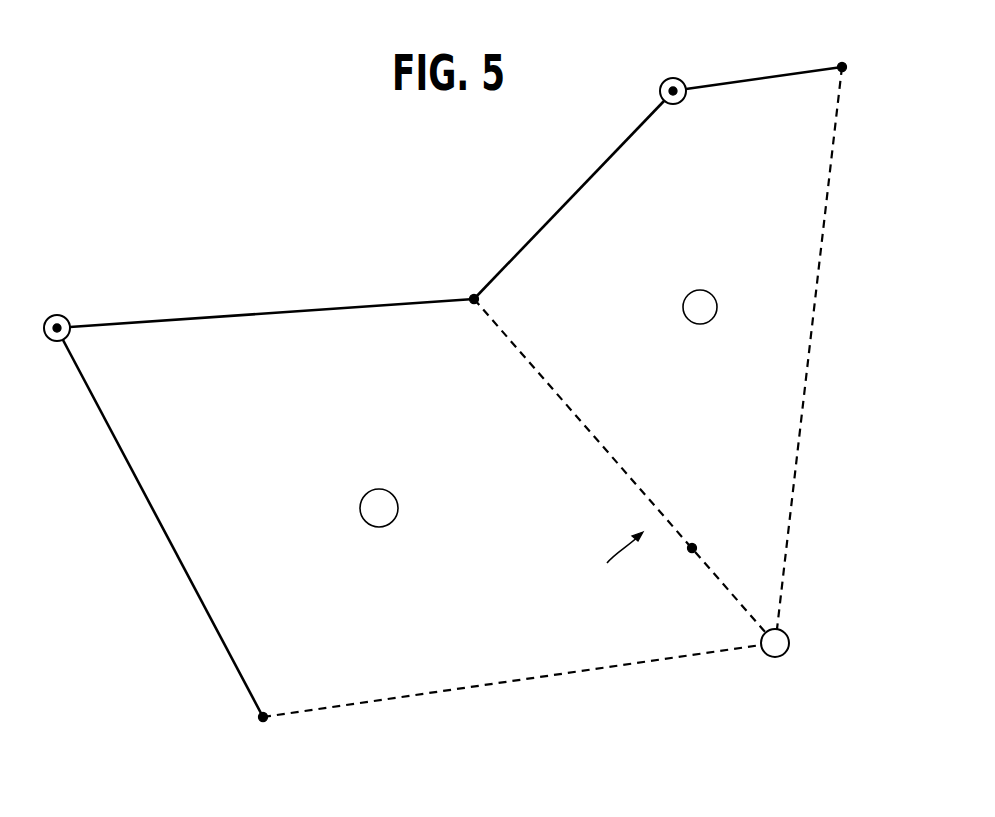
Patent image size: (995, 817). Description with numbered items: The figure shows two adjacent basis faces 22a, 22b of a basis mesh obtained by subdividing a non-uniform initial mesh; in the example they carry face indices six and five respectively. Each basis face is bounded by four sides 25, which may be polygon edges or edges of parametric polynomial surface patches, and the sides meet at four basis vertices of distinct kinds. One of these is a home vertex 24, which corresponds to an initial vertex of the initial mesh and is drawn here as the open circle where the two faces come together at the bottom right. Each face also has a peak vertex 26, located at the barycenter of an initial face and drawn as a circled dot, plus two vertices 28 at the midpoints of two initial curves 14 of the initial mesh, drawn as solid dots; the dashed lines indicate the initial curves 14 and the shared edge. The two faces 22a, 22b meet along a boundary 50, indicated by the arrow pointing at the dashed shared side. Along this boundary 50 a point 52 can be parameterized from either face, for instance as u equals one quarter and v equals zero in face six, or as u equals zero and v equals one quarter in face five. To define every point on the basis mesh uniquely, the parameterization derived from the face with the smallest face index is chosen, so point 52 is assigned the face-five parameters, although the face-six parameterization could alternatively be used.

The initial curve 14 is at (815, 300).
The basis face 22a is at (366, 457).
The basis face 22b is at (725, 246).
The home vertex 24 is at (786, 653).
The side 25 is at (277, 312).
The peak vertex 26 is at (61, 317).
The vertex 28 is at (473, 295).
The boundary 50 is at (612, 563).
The point 52 is at (696, 546).